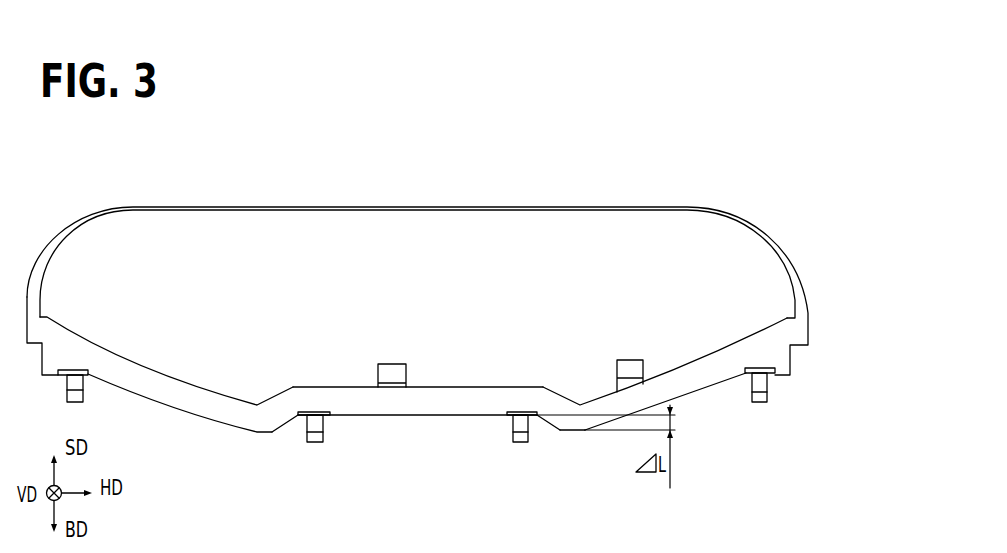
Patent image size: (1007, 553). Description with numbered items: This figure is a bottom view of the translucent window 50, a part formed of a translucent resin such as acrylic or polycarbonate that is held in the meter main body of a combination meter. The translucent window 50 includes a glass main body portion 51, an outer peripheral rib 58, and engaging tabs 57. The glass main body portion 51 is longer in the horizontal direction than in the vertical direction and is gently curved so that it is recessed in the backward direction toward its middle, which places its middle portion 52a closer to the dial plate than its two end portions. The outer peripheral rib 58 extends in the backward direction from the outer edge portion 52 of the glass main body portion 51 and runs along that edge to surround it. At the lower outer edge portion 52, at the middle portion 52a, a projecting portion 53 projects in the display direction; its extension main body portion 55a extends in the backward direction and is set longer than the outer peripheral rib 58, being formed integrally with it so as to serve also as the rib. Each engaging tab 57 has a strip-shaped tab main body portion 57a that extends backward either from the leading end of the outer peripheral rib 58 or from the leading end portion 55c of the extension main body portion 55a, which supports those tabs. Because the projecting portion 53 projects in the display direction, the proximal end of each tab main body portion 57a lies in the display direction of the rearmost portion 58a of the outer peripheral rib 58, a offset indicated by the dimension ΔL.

The translucent window 50 is at (740, 212).
The glass main body portion 51 is at (518, 233).
The outer edge portion 52 is at (107, 350).
The middle portion 52a is at (453, 387).
The projecting portion 53 is at (302, 422).
The extension main body portion 55a is at (392, 403).
The leading end portion 55c is at (517, 417).
The engaging tab 57 is at (85, 397).
The tab main body portion 57a is at (507, 432).
The outer peripheral rib 58 is at (167, 407).
The portion of the outer peripheral rib 58a is at (572, 432).